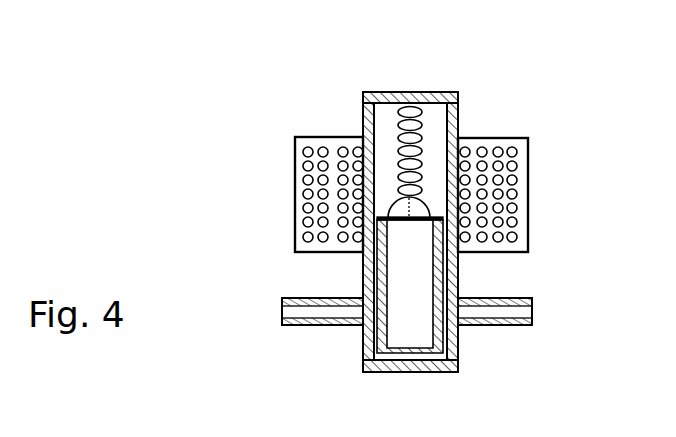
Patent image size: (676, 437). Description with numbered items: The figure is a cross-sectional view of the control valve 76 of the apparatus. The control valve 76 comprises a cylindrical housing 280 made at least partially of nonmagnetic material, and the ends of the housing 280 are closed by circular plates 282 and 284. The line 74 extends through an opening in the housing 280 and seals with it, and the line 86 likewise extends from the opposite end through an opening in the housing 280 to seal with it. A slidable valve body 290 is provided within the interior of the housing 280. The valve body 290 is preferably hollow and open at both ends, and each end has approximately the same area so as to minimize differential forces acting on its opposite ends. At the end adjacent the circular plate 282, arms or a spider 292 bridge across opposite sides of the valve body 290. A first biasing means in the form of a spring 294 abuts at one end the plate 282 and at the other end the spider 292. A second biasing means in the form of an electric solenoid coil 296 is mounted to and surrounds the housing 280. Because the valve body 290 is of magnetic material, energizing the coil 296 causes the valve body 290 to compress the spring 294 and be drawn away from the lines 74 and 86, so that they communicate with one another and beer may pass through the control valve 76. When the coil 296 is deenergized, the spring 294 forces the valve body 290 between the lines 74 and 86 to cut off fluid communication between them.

The cylindrical housing 280 is at (453, 115).
The circular plate 282 is at (382, 92).
The circular plate 284 is at (398, 372).
The valve body 290 is at (453, 280).
The spider 292 is at (395, 197).
The spring 294 is at (398, 135).
The electric solenoid coil 296 is at (528, 140).
The line 86 is at (308, 297).
The line 74 is at (493, 325).
The control valve 76 is at (363, 367).